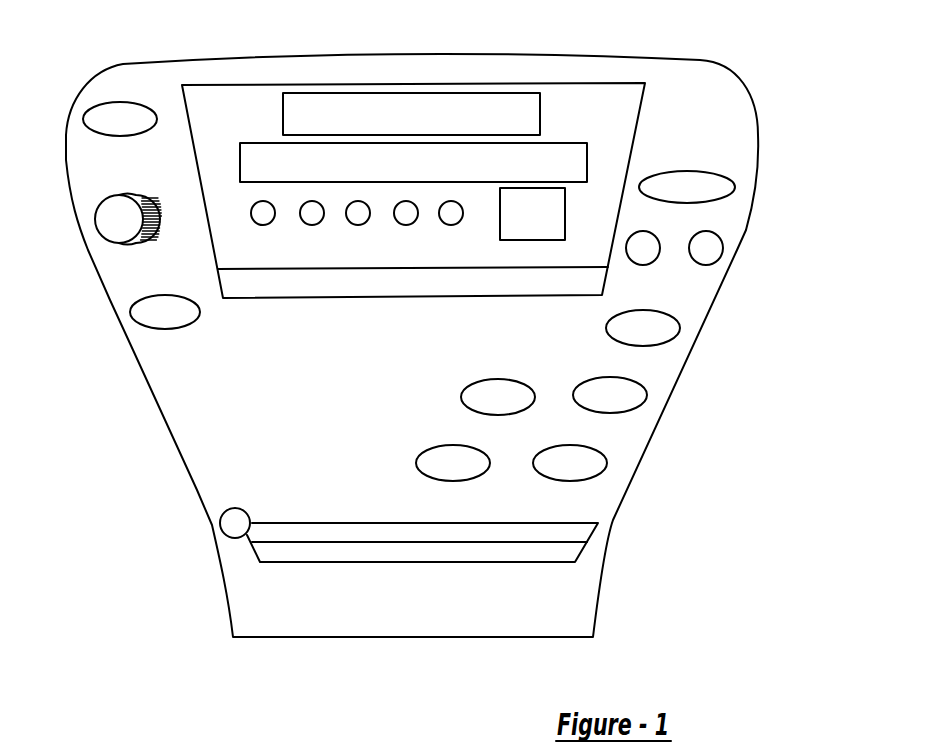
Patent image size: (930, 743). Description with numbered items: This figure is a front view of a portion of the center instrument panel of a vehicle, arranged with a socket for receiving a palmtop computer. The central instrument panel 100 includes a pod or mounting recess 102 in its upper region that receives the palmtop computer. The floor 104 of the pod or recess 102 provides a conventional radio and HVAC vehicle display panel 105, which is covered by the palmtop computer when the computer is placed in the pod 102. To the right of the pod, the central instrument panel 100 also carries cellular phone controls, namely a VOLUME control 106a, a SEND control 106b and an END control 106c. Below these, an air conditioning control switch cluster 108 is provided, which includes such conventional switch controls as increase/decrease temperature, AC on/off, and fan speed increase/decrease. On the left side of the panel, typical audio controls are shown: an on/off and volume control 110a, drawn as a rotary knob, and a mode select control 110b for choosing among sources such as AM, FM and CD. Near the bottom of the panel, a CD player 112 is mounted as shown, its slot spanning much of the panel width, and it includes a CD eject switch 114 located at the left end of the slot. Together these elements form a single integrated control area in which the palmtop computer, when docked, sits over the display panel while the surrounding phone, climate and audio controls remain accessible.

The central instrument panel 100 is at (770, 80).
The pod or mounting recess 102 is at (637, 127).
The floor of the pod 104 is at (575, 131).
The radio and HVAC vehicle display panel 105 is at (418, 112).
The VOLUME control 106a is at (695, 178).
The SEND control 106b is at (647, 240).
The END control 106c is at (710, 243).
The air conditioning control switch cluster 108 is at (626, 364).
The audio control (on/off and volume) 110a is at (118, 228).
The audio control (mode select) 110b is at (159, 315).
The CD player 112 is at (277, 543).
The CD eject switch 114 is at (232, 523).